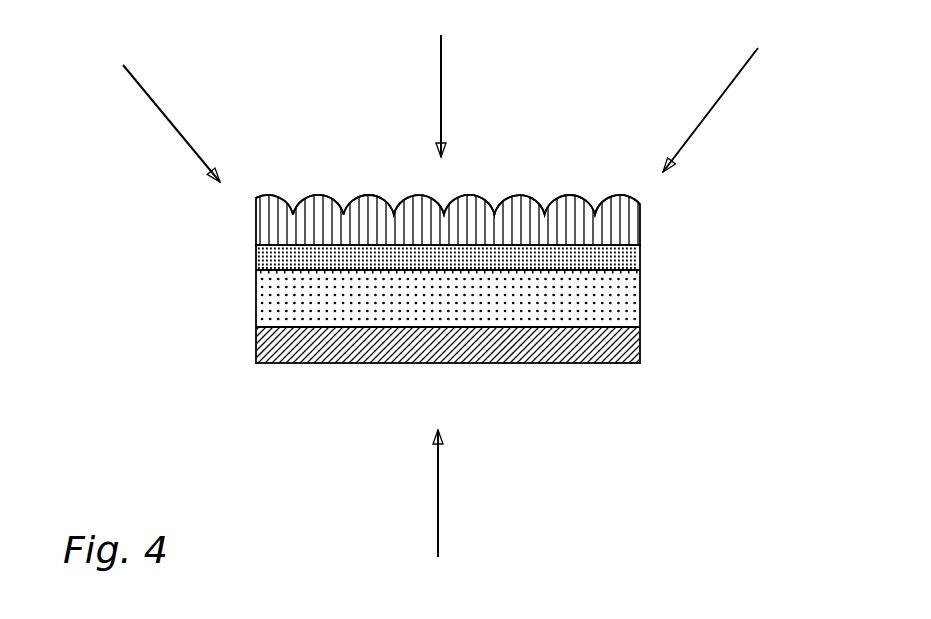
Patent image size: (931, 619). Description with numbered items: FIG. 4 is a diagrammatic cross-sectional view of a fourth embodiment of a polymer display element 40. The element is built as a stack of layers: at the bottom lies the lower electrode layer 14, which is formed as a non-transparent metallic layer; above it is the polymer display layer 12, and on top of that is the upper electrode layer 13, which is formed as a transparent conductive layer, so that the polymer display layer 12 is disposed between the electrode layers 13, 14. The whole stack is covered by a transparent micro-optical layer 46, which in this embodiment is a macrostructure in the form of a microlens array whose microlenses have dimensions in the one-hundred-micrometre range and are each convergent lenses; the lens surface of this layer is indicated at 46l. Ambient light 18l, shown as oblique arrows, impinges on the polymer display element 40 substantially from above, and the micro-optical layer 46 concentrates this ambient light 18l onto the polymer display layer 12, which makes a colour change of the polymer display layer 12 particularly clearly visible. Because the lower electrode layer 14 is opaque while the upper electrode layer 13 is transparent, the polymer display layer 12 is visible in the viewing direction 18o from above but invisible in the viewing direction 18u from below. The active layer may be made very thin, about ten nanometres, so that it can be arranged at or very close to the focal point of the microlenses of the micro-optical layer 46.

The polymer display element 40 is at (223, 275).
The transparent micro-optical layer 46 is at (630, 225).
The structured light-incident surface of top layer 46l is at (473, 195).
The upper electrode layer 13 is at (640, 258).
The polymer display layer 12 is at (625, 308).
The lower electrode layer 14 is at (583, 360).
The ambient light 18l is at (172, 120).
The viewing direction from above 18o is at (441, 88).
The viewing direction from below 18u is at (438, 510).